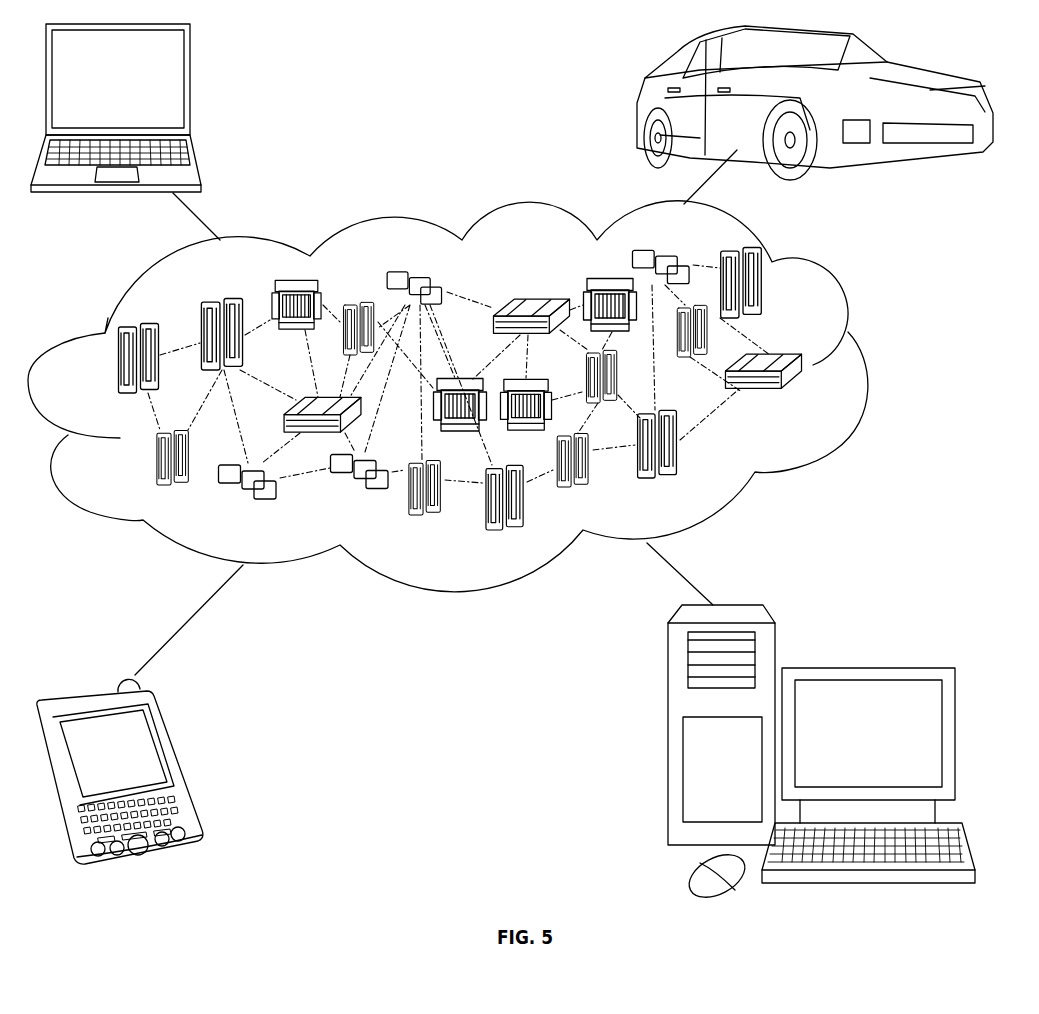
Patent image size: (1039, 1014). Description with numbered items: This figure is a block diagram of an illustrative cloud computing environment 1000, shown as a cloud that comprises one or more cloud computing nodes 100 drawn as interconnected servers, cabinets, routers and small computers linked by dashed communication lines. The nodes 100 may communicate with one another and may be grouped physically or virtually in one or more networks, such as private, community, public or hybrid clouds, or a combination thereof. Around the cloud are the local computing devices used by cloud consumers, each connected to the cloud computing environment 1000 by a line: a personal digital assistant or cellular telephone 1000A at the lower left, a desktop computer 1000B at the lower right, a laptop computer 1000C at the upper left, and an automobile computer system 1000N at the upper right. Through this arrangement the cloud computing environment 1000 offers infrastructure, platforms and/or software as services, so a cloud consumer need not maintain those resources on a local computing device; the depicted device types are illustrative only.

The laptop computer 1000C is at (190, 88).
The automobile computer system 1000N is at (637, 100).
The cloud computing environment 1000 is at (863, 371).
The cloud computing node 100 is at (805, 399).
The personal digital assistant (PDA) or cellular telephone 1000A is at (170, 763).
The desktop computer 1000B is at (863, 668).